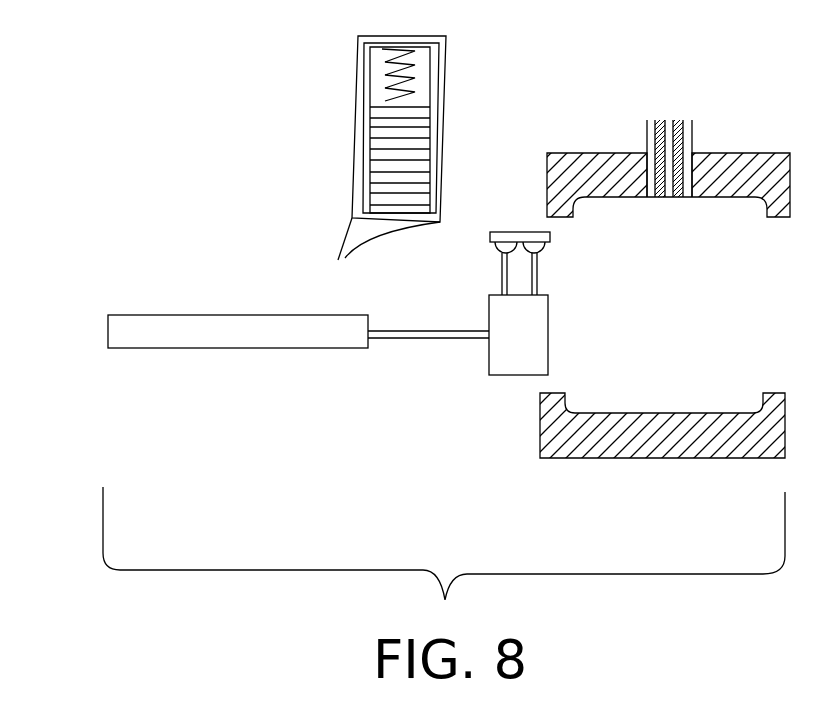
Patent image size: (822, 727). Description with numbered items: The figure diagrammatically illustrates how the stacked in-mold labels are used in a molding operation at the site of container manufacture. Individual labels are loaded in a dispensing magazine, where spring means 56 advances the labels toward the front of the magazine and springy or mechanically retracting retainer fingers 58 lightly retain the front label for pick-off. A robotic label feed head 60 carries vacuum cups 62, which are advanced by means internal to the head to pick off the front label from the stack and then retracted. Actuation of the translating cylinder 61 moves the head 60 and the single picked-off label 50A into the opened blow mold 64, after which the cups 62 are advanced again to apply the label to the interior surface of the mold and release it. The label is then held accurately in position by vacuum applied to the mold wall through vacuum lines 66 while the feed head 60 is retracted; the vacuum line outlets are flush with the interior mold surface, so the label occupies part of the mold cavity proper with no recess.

The spring means 56 is at (395, 75).
The retainer fingers 58 is at (366, 163).
The robotic label feed head 60 is at (517, 363).
The translating cylinder 61 is at (237, 315).
The vacuum cups 62 is at (517, 256).
The picked-off label 50A is at (552, 238).
The blow mold 64 is at (722, 330).
The vacuum lines 66 is at (613, 108).